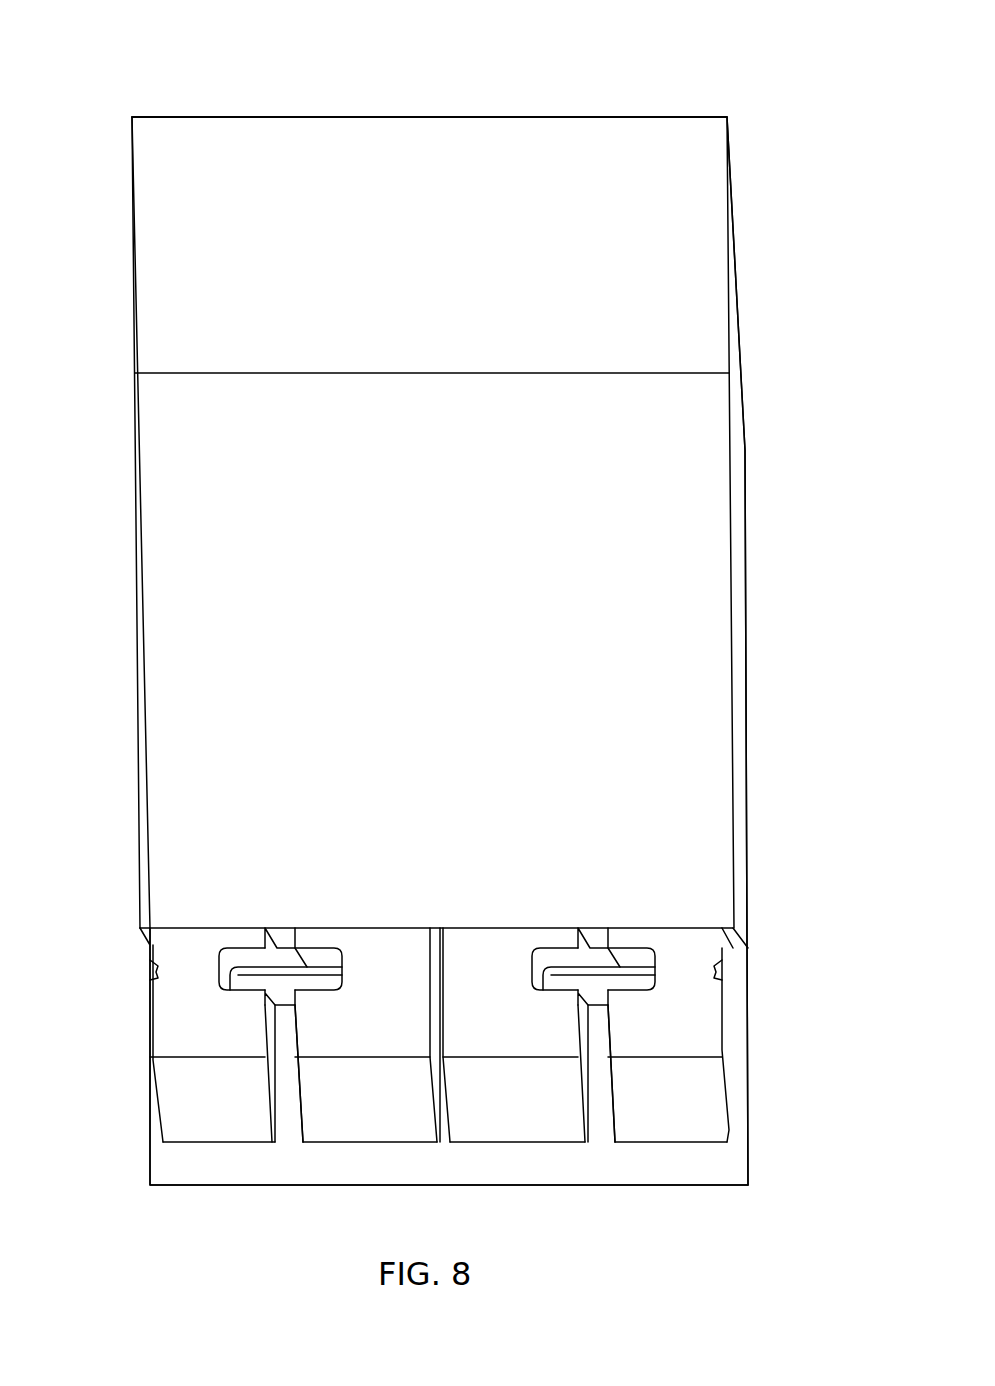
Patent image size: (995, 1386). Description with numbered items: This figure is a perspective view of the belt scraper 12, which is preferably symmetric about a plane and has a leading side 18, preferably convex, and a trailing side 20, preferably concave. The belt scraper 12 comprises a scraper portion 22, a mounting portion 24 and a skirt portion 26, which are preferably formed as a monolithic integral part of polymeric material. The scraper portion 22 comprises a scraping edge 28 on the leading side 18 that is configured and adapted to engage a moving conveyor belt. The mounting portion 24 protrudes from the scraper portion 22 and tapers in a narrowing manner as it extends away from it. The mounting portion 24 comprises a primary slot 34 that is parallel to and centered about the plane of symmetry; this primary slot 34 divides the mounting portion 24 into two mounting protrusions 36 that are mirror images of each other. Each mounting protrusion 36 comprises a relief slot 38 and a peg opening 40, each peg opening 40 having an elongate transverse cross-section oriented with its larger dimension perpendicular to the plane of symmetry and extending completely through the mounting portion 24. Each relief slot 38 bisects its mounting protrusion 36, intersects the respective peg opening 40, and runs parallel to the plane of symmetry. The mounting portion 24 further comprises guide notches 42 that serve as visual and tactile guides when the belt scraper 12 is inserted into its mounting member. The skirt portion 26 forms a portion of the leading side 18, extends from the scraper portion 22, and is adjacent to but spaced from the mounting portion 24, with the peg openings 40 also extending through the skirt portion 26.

The belt scraper 12 is at (806, 399).
The leading side 18 is at (747, 562).
The trailing side 20 is at (155, 648).
The scraper portion 22 is at (155, 464).
The mounting portion 24 is at (165, 1042).
The skirt portion 26 is at (480, 1162).
The scraping edge 28 is at (385, 117).
The primary slot 34 is at (435, 1038).
The mounting protrusions 36 is at (332, 1130).
The relief slot 38 is at (284, 1077).
The peg opening 40 is at (275, 982).
The guide notches 42 is at (150, 970).